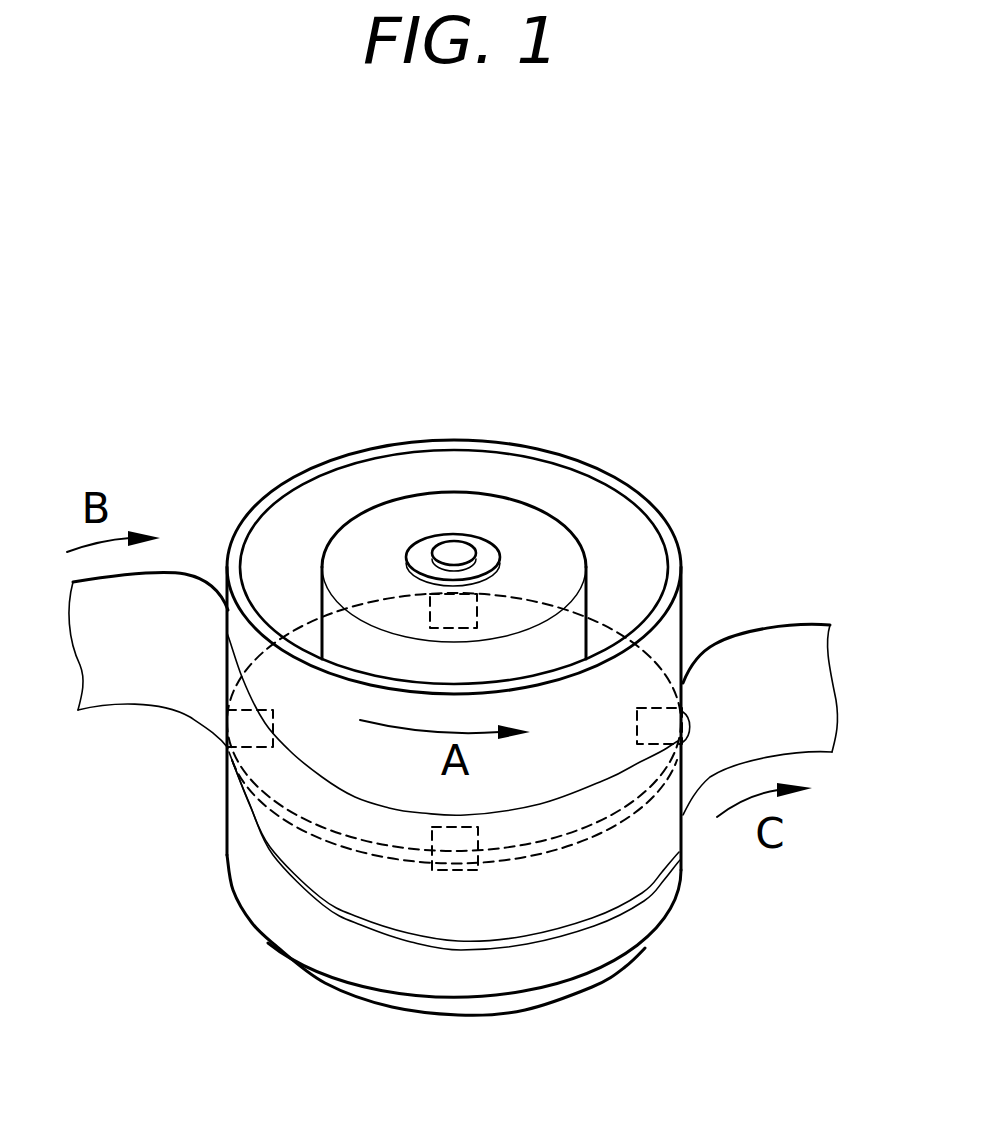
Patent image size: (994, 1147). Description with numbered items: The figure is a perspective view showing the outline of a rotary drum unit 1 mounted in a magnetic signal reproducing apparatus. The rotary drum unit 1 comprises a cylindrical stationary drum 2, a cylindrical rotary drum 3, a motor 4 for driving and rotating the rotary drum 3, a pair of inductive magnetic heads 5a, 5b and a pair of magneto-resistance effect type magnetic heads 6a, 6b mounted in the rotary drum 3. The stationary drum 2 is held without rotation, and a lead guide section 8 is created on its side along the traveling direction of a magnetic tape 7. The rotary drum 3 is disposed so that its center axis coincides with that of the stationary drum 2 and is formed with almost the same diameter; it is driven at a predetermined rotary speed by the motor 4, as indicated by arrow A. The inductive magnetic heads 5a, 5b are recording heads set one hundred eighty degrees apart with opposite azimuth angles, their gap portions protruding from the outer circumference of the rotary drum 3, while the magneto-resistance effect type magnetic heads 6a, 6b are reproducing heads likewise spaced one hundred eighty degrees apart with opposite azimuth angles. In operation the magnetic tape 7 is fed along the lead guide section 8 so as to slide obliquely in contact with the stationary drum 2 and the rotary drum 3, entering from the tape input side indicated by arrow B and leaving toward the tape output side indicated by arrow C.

The rotary drum unit 1 is at (714, 490).
The stationary drum 2 is at (630, 927).
The rotary drum 3 is at (684, 615).
The motor 4 is at (395, 993).
The inductive magnetic head 5a is at (661, 712).
The inductive magnetic head 5b is at (228, 722).
The magneto-resistance effect type magnetic head 6a is at (470, 612).
The magneto-resistance effect type magnetic head 6b is at (458, 870).
The magnetic tape 7 is at (815, 657).
The lead guide section 8 is at (348, 912).